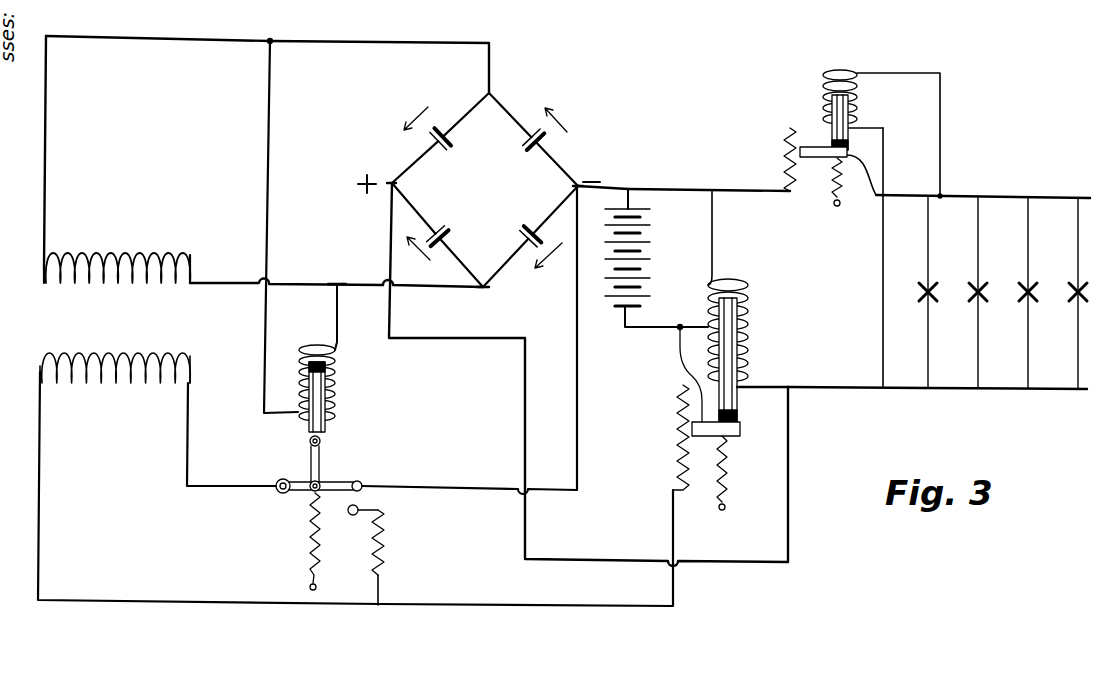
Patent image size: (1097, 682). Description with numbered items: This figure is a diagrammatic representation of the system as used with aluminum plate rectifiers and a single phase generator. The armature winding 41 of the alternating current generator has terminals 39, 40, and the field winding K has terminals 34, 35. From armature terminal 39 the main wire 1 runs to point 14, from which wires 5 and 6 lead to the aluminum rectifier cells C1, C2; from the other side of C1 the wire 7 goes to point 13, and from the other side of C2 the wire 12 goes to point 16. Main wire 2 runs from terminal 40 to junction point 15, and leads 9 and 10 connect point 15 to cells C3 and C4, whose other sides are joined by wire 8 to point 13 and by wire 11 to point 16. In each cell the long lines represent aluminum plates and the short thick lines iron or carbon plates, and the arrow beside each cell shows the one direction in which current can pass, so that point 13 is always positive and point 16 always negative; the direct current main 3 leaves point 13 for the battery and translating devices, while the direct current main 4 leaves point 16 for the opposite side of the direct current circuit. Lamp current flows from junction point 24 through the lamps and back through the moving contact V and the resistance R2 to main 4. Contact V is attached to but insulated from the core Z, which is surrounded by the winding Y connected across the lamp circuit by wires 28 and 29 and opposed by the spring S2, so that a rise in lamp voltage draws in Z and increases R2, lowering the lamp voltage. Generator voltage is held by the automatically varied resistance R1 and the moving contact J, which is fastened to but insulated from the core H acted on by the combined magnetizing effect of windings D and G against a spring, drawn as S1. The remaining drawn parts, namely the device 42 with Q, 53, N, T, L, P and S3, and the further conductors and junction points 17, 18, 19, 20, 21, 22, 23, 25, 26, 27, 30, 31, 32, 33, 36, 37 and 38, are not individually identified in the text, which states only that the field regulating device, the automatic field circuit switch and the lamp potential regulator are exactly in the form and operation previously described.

The main wire 1 is at (163, 38).
The main wire 2 is at (336, 288).
The direct current main 3 is at (388, 255).
The direct current main 4 is at (672, 190).
The wire 5 is at (472, 111).
The wire 6 is at (510, 112).
The wire 7 is at (418, 165).
The wire 8 is at (414, 208).
The lead 9 is at (466, 262).
The lead 10 is at (499, 268).
The wire 11 is at (555, 210).
The wire 12 is at (556, 166).
The junction point 13 is at (394, 184).
The junction point 14 is at (471, 120).
The junction point 15 is at (490, 297).
The junction point 16 is at (574, 186).
The conductor 17 is at (629, 189).
The storage battery 18 is at (645, 328).
The conductor 19 is at (766, 387).
The conductor 20 is at (816, 390).
The lamp circuit conductor 21 is at (1013, 196).
The conductor 22 is at (267, 167).
The conductor 23 is at (338, 321).
The junction point 24 is at (272, 44).
The junction 25 is at (336, 286).
The conductor 26 is at (188, 431).
The conductor 27 is at (39, 463).
The wire 28 is at (880, 262).
The wire 29 is at (942, 80).
The conductor 30 is at (579, 406).
The junction 31 is at (383, 605).
The conductor 32 is at (681, 369).
The junction 33 is at (680, 326).
The field winding terminal 34 is at (191, 361).
The field winding terminal 35 is at (40, 366).
The junction 36 is at (942, 195).
The junction 37 is at (880, 388).
The resistance 38 is at (384, 538).
The armature terminal 39 is at (44, 271).
The armature terminal 40 is at (192, 268).
The armature winding 41 is at (111, 254).
The solenoid coil 42 is at (336, 369).
The pivot 53 is at (322, 452).
The aluminum rectifier cell C1 is at (452, 143).
The aluminum rectifier cell C2 is at (520, 142).
The aluminum rectifier cell C3 is at (449, 228).
The aluminum rectifier cell C4 is at (516, 239).
The field winding K is at (120, 355).
The solenoid core Q is at (326, 421).
The lever pivot N is at (280, 480).
The lever pivot T is at (330, 484).
The lever L is at (362, 485).
The contact P is at (351, 515).
The spring S3 is at (311, 522).
The winding G is at (749, 298).
The winding D is at (748, 348).
The core H is at (738, 405).
The moving contact J is at (742, 431).
The spring S1 is at (728, 470).
The automatically varied resistance R1 is at (662, 437).
The winding Y is at (823, 85).
The core Z is at (849, 134).
The moving contact V is at (812, 147).
The resistance R2 is at (773, 159).
The spring S2 is at (849, 183).